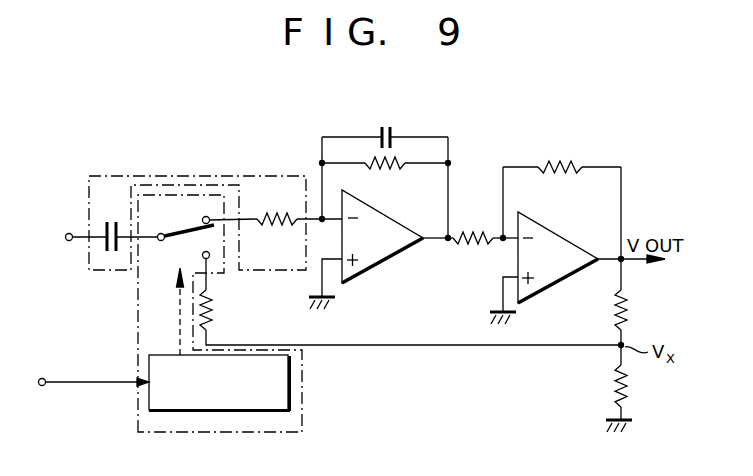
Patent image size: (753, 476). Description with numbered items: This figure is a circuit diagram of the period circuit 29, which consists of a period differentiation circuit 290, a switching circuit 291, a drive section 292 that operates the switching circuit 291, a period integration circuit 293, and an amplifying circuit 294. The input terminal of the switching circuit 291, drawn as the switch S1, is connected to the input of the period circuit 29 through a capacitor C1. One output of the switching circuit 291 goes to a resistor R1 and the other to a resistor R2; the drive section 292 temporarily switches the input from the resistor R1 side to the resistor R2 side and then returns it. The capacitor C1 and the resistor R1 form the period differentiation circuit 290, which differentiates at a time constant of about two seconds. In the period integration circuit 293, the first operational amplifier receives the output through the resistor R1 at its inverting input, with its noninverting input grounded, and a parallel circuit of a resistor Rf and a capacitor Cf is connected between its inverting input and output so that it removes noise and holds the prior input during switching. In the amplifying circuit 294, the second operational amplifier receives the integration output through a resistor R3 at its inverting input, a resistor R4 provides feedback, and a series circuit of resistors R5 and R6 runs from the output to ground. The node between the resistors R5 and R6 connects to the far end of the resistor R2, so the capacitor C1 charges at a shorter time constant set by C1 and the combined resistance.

The period circuit 29 is at (385, 160).
The period differentiation circuit 290 is at (167, 176).
The switching circuit 291 is at (138, 333).
The drive section 292 is at (277, 399).
The period integration circuit 293 is at (376, 221).
The amplifying circuit 294 is at (563, 239).
The capacitor C1 is at (112, 252).
The switch S1 is at (180, 228).
The resistor R1 is at (275, 227).
The resistor R2 is at (213, 302).
The capacitor Cf is at (408, 127).
The resistor Rf is at (399, 155).
The resistor R3 is at (478, 233).
The resistor for feedback R4 is at (561, 160).
The resistor R5 is at (614, 300).
The resistor R6 is at (615, 386).